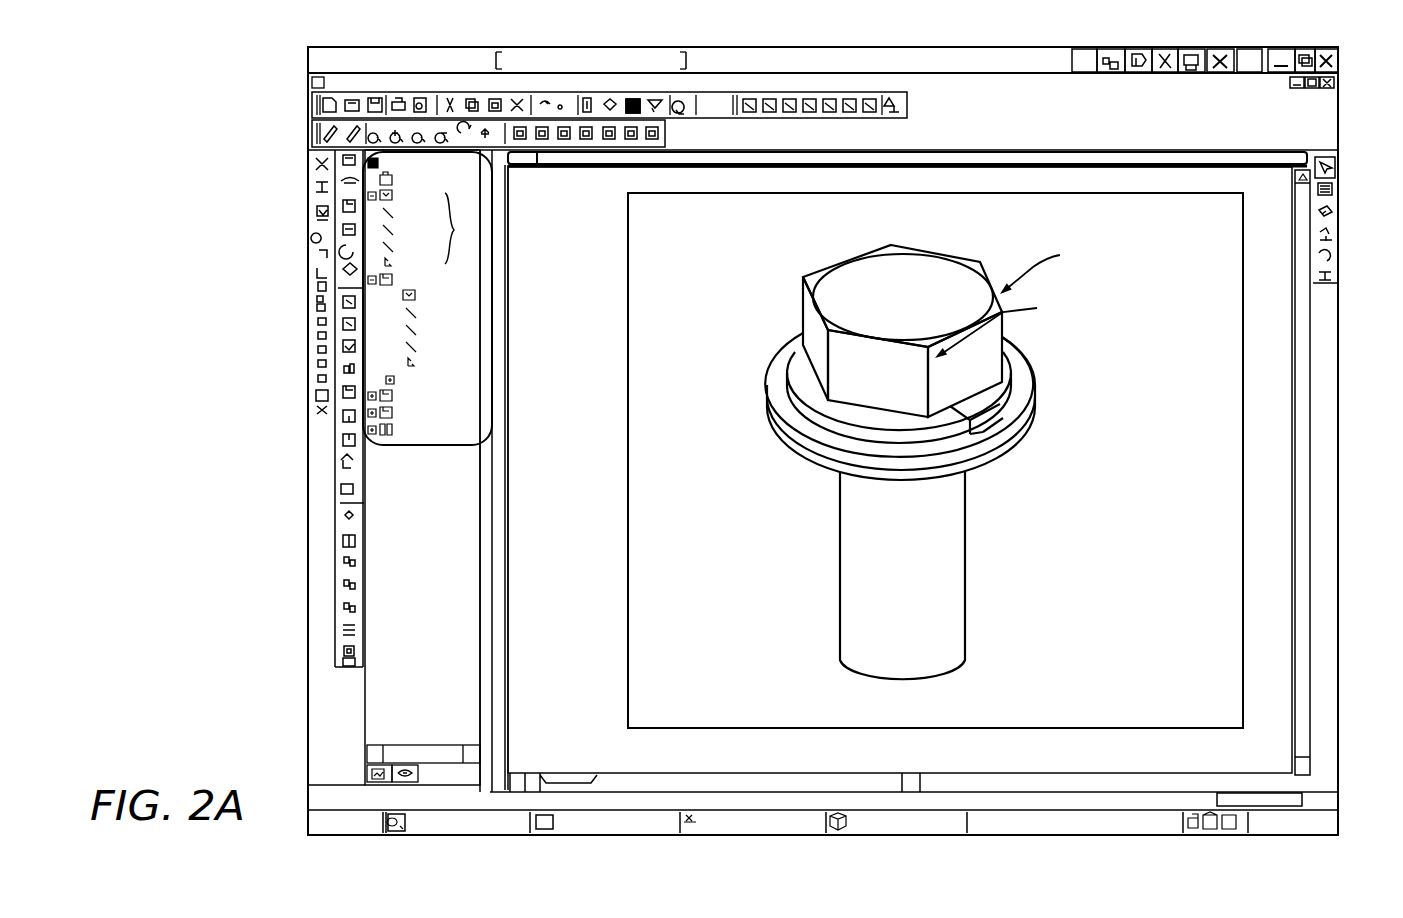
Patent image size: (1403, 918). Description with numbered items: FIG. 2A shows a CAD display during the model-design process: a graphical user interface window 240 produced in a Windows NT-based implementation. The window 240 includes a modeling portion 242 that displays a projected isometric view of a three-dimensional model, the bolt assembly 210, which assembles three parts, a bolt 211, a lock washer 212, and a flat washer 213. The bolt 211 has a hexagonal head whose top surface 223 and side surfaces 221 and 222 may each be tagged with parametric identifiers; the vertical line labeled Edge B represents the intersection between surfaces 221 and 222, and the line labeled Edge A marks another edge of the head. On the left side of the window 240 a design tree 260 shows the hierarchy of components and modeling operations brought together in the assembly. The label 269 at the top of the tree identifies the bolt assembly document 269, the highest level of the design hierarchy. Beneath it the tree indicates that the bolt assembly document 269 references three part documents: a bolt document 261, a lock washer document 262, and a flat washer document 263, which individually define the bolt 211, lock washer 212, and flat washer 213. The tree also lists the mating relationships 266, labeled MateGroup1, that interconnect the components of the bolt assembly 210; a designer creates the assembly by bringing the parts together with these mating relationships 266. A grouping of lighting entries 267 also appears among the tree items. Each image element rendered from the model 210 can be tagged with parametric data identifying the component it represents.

The bolt assembly 210 is at (1032, 728).
The bolt 211 is at (786, 293).
The lock washer 212 is at (1017, 385).
The flat washer 213 is at (997, 448).
The surface of the bolt 221 is at (896, 381).
The surface of the bolt 222 is at (989, 381).
The top surface of the bolt 223 is at (921, 304).
The window 240 is at (1398, 123).
The modeling portion 242 is at (606, 673).
The design tree 260 is at (395, 447).
The bolt document 261 is at (470, 422).
The lock washer document 262 is at (467, 388).
The flat washer document 263 is at (470, 267).
The mating relationships 266 is at (443, 438).
The lighting feature items 267 is at (504, 228).
The bolt assembly document 269 is at (473, 179).